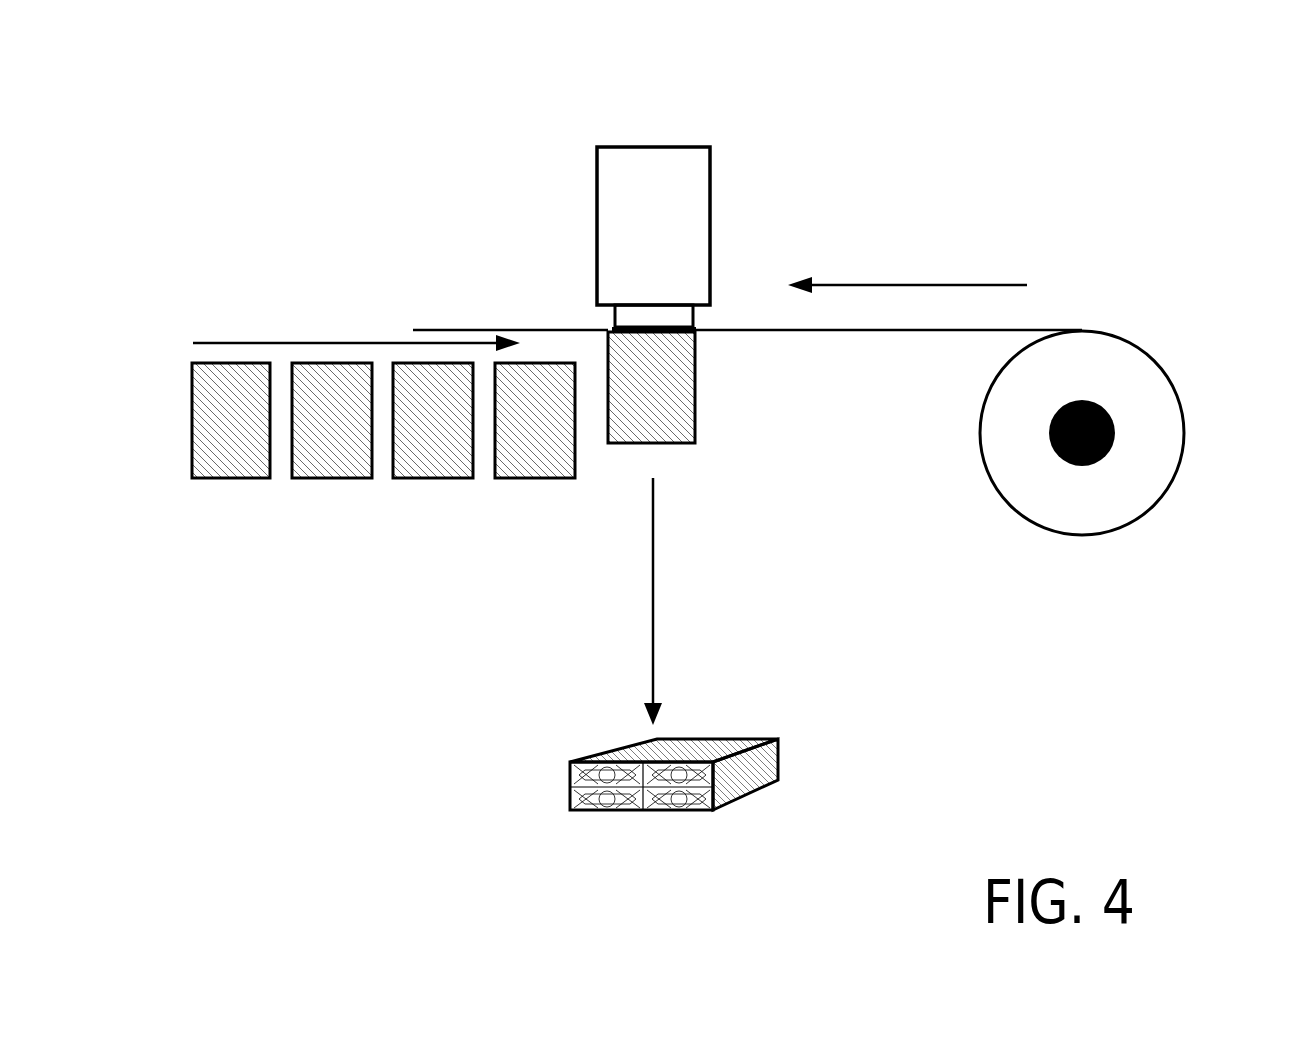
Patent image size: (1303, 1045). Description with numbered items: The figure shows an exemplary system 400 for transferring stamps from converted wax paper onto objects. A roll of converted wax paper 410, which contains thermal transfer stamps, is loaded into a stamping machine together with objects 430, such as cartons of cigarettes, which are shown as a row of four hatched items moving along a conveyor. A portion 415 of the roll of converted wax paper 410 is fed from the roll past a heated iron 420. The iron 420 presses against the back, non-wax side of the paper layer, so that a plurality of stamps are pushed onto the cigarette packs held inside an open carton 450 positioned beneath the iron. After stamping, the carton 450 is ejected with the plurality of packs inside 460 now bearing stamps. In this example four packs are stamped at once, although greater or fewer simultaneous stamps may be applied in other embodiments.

The system 400 is at (443, 102).
The converted wax paper 410 is at (1125, 365).
The portion of the roll of converted wax paper 415 is at (867, 330).
The heated iron 420 is at (603, 265).
The objects 430 is at (570, 502).
The open carton 450 is at (680, 440).
The packs inside 460 is at (695, 805).